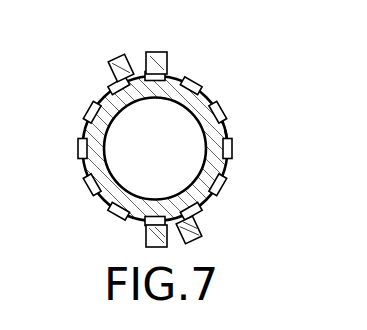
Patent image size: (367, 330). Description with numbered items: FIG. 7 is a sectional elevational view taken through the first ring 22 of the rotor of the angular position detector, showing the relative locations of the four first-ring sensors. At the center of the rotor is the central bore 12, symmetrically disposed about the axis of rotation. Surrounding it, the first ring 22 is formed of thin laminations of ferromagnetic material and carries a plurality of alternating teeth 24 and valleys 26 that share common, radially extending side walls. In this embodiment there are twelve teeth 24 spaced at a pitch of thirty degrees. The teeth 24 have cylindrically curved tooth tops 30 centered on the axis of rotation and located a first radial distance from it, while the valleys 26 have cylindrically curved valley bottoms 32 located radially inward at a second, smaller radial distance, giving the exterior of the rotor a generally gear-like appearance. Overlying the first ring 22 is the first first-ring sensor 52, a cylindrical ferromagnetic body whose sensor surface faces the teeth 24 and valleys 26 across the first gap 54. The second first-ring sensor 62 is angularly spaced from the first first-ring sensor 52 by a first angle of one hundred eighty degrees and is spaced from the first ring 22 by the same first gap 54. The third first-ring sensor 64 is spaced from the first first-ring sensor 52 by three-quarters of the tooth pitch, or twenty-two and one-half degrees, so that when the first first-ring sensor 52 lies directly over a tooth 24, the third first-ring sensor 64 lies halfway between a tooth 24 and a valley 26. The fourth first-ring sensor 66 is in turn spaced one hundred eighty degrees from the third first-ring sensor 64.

The central bore 12 is at (126, 158).
The first ring 22 is at (210, 167).
The teeth 24 is at (223, 130).
The valleys 26 is at (217, 108).
The tooth tops 30 is at (230, 136).
The valley bottoms 32 is at (213, 115).
The first first-ring sensor 52 is at (122, 66).
The first gap 54 is at (108, 81).
The second first-ring sensor 62 is at (198, 229).
The third first-ring sensor 64 is at (154, 62).
The fourth first-ring sensor 66 is at (147, 231).